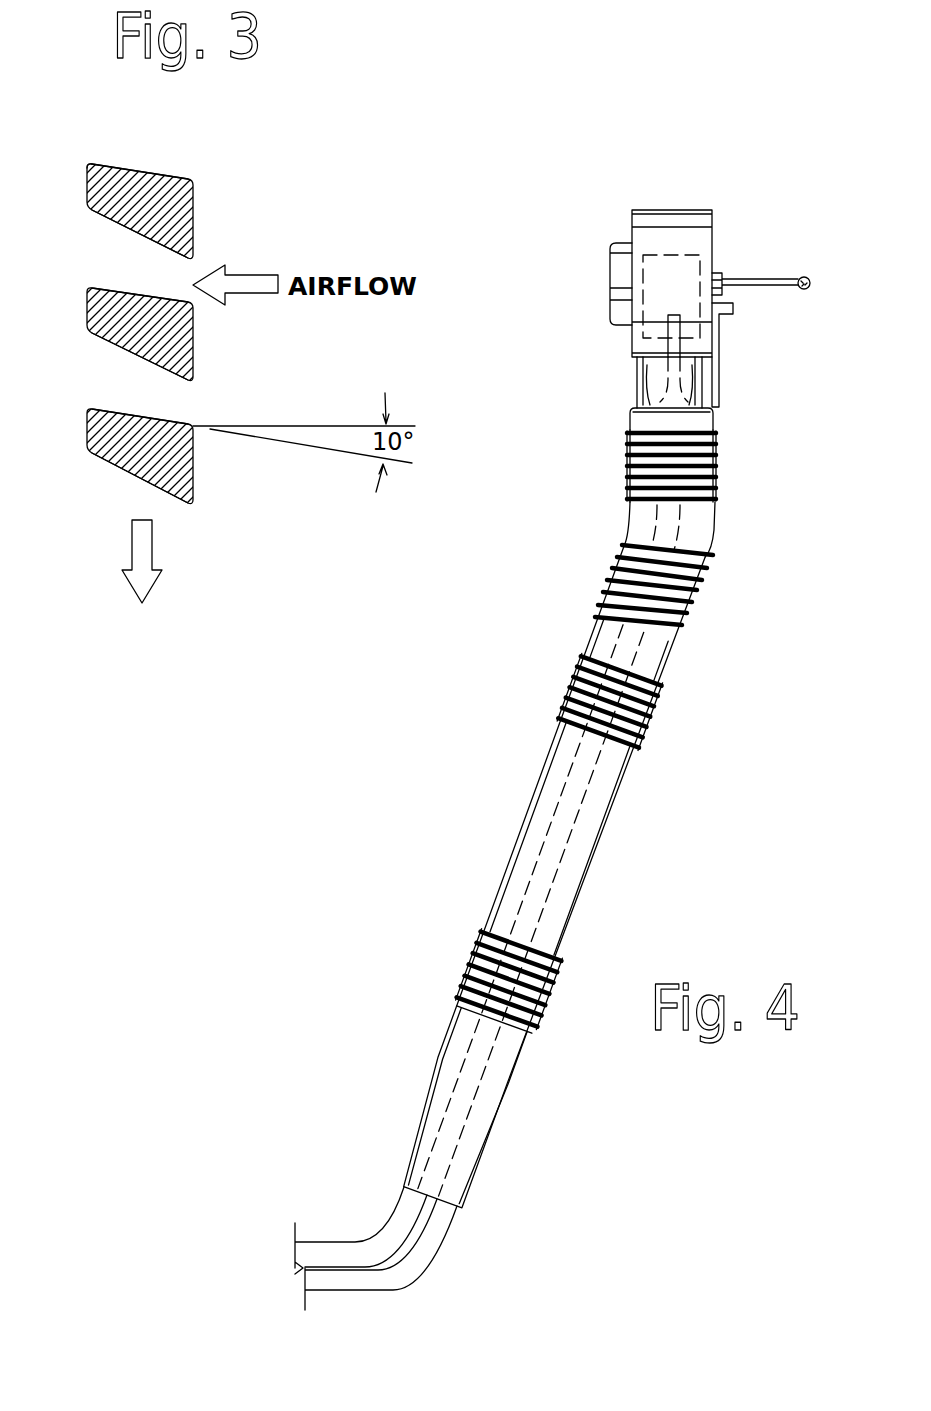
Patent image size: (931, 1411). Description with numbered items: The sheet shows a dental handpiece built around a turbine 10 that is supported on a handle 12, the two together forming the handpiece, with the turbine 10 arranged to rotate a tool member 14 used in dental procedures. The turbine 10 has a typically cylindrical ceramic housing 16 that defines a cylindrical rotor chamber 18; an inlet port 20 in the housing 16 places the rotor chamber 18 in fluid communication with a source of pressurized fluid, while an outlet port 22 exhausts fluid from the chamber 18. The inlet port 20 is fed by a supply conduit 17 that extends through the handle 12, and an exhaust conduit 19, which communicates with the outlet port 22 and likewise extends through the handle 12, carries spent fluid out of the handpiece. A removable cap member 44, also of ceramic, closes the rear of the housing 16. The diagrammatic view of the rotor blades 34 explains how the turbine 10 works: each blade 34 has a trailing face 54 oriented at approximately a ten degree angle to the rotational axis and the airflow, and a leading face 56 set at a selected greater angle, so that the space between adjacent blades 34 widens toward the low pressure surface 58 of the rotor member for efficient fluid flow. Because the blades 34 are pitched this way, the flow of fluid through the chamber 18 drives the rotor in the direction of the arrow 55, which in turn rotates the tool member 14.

In FIG. 4, the turbine 10 is at (704, 154).
In FIG. 4, the handle 12 is at (524, 818).
In FIG. 4, the tool member 14 is at (768, 280).
In FIG. 4, the housing 16 is at (648, 210).
In FIG. 4, the supply conduit 17 is at (597, 877).
In FIG. 4, the rotor chamber 18 is at (655, 255).
In FIG. 4, the exhaust conduit 19 is at (533, 872).
In FIG. 4, the inlet port 20 is at (713, 383).
In FIG. 4, the outlet port 22 is at (633, 392).
In FIG. 3, the blades 34 is at (195, 217).
In FIG. 4, the cap member 44 is at (610, 280).
In FIG. 3, the trailing face 54 is at (163, 175).
In FIG. 3, the arrow 55 is at (153, 545).
In FIG. 3, the leading face 56 is at (125, 228).
In FIG. 3, the low pressure surface 58 is at (85, 182).